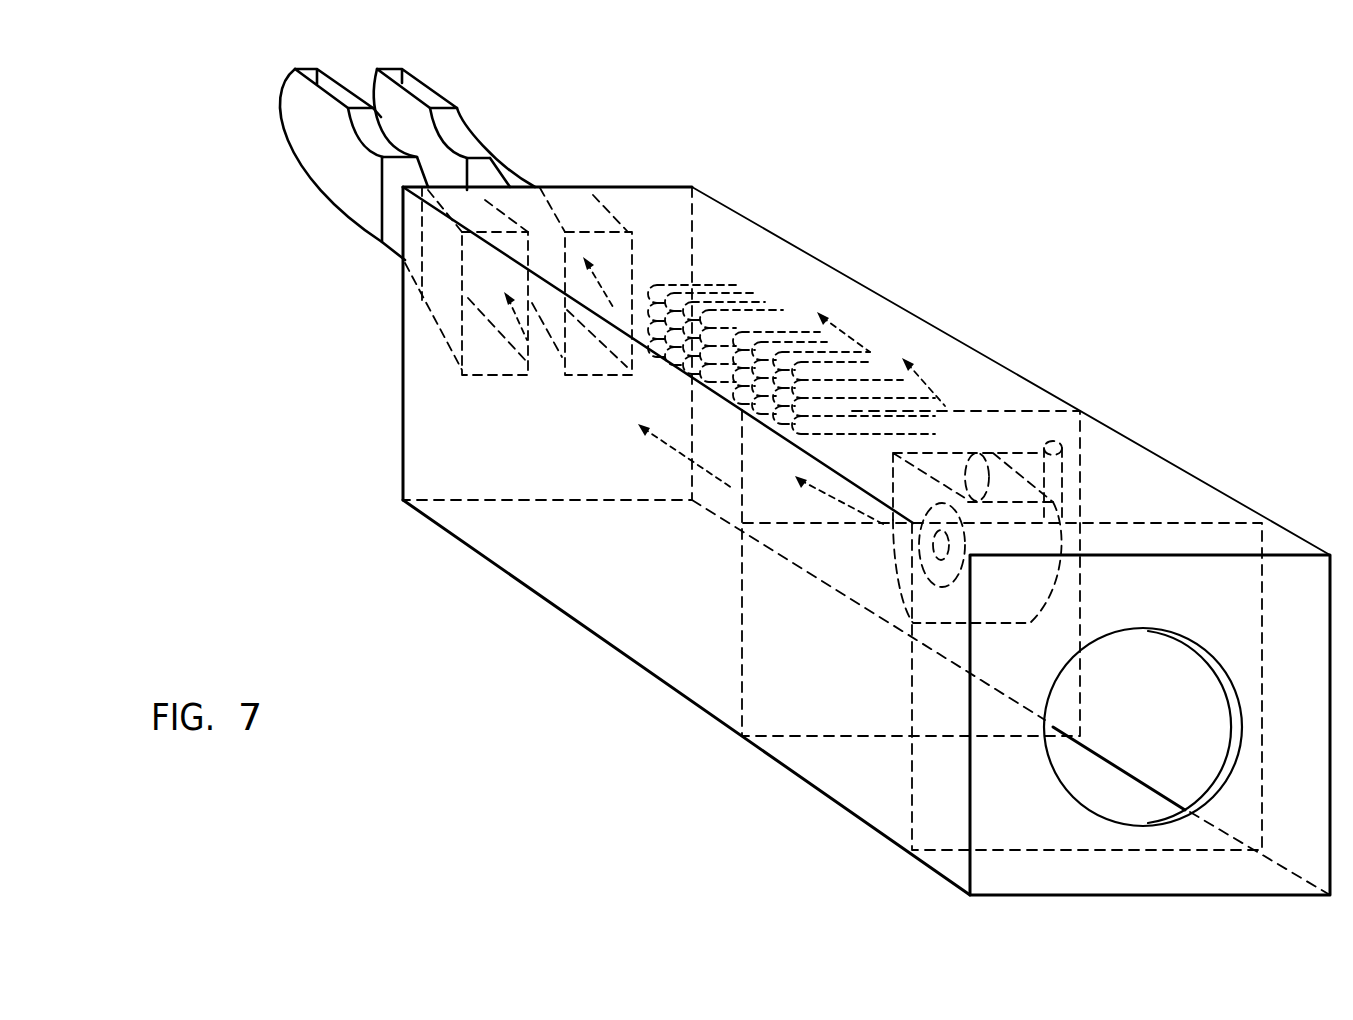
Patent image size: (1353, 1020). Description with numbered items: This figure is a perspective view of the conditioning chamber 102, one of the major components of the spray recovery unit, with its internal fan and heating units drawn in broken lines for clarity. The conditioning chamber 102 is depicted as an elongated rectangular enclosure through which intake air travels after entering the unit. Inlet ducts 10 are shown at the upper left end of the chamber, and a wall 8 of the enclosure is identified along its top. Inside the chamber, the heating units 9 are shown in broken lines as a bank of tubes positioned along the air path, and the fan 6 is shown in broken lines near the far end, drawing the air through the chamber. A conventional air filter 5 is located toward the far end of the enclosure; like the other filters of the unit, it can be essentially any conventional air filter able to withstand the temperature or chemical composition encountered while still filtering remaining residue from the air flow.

The air filter 5 is at (1185, 513).
The fan 6 is at (1067, 517).
The top wall of housing 8 is at (723, 240).
The heating units 9 is at (778, 295).
The inlet ducts 10 is at (352, 33).
The conditioning chamber 102 is at (443, 439).